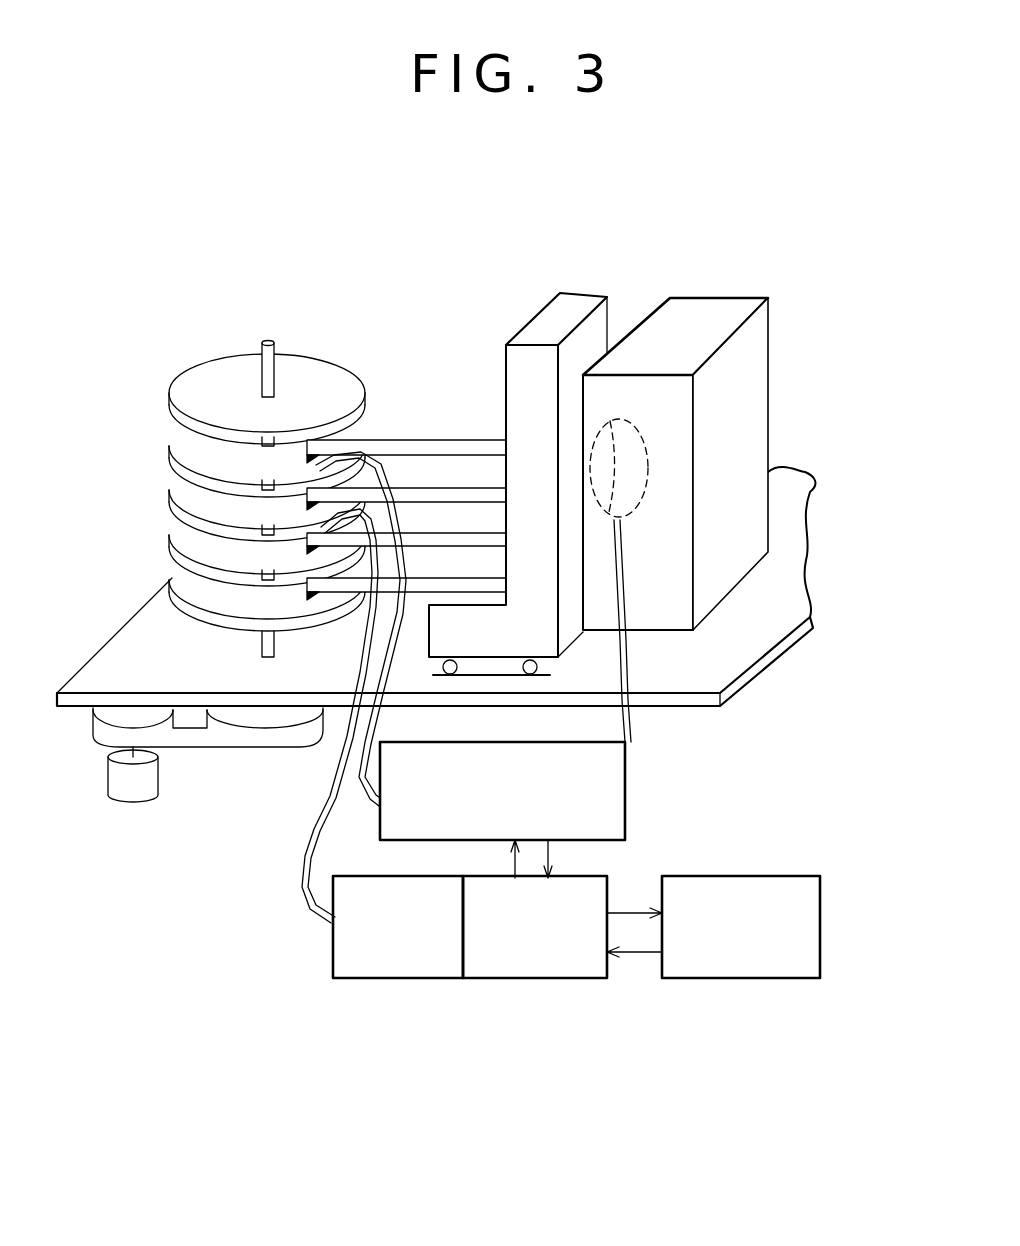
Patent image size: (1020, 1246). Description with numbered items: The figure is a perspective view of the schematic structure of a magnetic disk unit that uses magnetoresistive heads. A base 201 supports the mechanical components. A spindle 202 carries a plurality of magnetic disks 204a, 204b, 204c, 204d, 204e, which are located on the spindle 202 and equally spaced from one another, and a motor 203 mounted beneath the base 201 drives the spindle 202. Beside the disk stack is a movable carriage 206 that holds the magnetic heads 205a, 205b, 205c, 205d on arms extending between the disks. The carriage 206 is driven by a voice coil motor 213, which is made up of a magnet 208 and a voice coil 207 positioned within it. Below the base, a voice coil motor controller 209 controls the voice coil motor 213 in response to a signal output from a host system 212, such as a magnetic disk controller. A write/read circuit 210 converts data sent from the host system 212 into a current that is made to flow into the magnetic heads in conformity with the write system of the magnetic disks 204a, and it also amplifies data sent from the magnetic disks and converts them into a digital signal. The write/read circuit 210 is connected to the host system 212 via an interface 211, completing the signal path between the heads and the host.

The base 201 is at (705, 708).
The spindle 202 is at (263, 340).
The motor 203 is at (152, 785).
The magnetic disk 204a is at (320, 375).
The magnetic disk 204b is at (350, 432).
The magnetic disk 204c is at (177, 442).
The magnetic disk 204d is at (190, 528).
The magnetic disk 204e is at (190, 578).
The magnetic head 205a is at (305, 548).
The magnetic head 205b is at (302, 500).
The magnetic head 205c is at (300, 445).
The magnetic head 205d is at (310, 597).
The carriage 206 is at (595, 298).
The voice coil 207 is at (722, 458).
The magnet 208 is at (718, 312).
The voice coil motor controller 209 is at (628, 808).
The write/read circuit 210 is at (396, 978).
The interface 211 is at (538, 978).
The host system 212 is at (740, 978).
The voice coil motor 213 is at (681, 449).